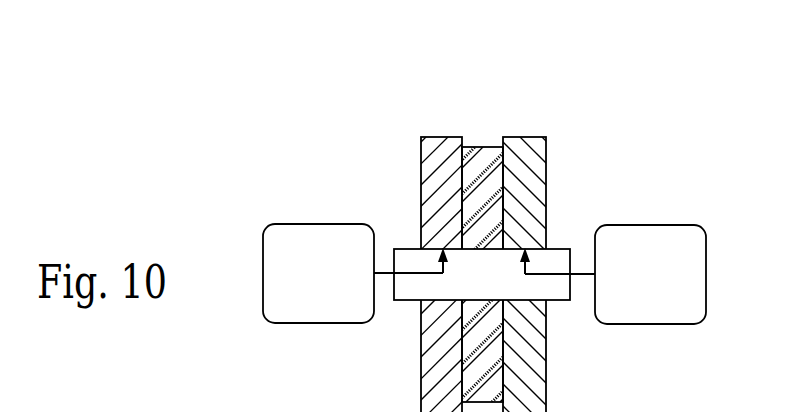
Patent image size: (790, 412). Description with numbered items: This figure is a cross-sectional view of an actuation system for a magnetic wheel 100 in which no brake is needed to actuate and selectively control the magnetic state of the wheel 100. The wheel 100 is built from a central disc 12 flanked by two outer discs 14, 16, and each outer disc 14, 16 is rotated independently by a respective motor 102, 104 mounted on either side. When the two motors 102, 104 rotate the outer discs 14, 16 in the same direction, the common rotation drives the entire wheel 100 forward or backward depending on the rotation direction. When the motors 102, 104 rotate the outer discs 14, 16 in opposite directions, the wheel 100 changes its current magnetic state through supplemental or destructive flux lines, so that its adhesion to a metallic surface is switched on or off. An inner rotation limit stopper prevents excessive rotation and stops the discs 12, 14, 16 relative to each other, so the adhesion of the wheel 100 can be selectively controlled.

The wheel 100 is at (308, 62).
The disc 12 is at (484, 147).
The outer disc 14 is at (432, 137).
The outer disc 16 is at (534, 137).
The motor 102 is at (316, 224).
The motor 104 is at (659, 225).